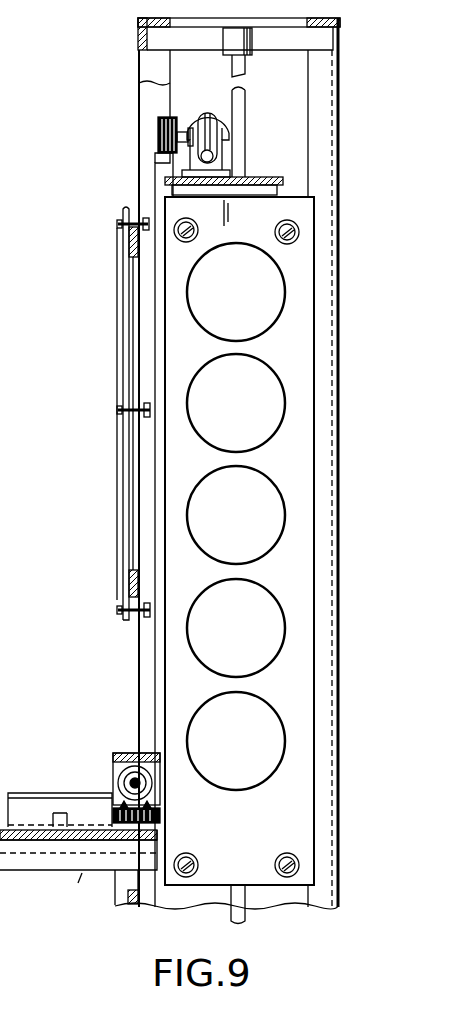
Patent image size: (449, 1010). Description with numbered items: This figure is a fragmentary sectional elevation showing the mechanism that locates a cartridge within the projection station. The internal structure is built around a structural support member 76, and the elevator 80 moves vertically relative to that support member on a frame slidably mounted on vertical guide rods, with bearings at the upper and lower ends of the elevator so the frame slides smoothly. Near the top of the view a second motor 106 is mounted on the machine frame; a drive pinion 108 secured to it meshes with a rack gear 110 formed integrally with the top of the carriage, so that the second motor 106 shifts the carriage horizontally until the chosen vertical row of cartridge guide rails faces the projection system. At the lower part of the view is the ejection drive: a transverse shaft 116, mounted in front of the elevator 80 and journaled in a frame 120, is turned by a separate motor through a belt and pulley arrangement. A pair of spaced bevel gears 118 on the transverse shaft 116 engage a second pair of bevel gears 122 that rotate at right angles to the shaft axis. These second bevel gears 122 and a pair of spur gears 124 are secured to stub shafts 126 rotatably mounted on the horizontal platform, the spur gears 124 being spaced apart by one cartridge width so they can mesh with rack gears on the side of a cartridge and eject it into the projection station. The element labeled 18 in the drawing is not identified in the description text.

The rod 18 is at (241, 100).
The structural support member 76 is at (328, 142).
The elevator 80 is at (283, 184).
The second motor 106 is at (221, 84).
The drive pinion 108 is at (158, 127).
The rack gear 110 is at (165, 153).
The transverse shaft 116 is at (132, 782).
The bevel gears 118 is at (128, 787).
The frame 120 is at (122, 753).
The second bevel gears 122 is at (148, 801).
The spur gears 124 is at (160, 820).
The stub shafts 126 is at (117, 827).